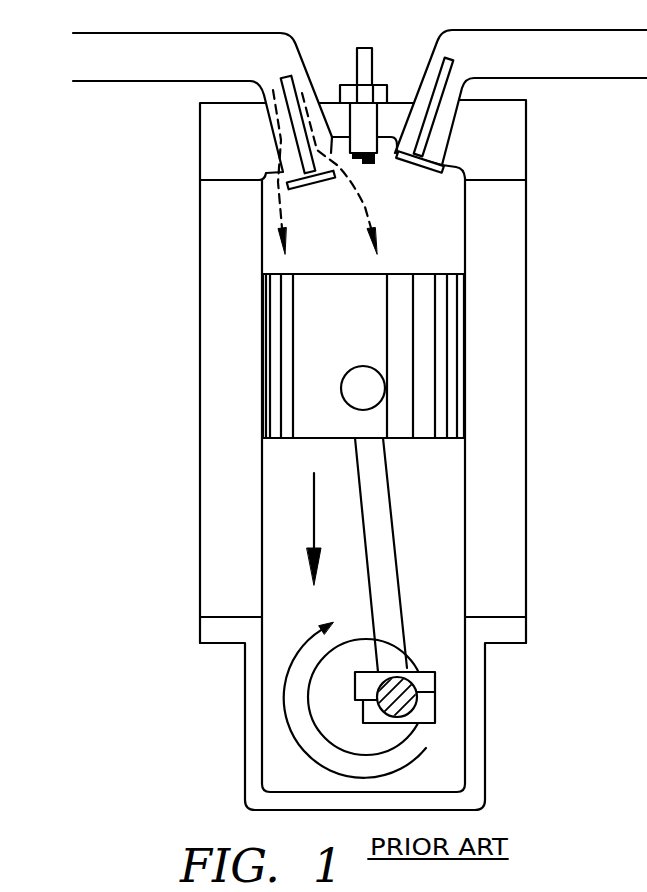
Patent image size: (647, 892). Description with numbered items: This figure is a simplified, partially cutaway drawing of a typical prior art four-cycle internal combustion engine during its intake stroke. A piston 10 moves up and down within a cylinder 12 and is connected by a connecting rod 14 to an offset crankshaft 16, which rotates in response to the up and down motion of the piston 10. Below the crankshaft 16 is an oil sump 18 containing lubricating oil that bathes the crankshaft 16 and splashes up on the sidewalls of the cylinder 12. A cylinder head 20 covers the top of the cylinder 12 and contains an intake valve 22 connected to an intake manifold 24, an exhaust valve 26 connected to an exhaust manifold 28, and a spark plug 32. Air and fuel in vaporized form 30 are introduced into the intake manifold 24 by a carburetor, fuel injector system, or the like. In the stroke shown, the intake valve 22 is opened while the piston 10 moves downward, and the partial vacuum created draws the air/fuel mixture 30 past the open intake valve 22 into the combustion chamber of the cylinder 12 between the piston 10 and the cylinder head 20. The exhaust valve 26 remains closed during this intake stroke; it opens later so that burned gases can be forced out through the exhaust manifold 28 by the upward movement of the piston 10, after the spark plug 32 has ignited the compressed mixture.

The piston 10 is at (442, 354).
The cylinder 12 is at (492, 262).
The connecting rod 14 is at (378, 533).
The crankshaft 16 is at (335, 715).
The oil sump 18 is at (445, 752).
The cylinder head 20 is at (497, 146).
The intake valve 22 is at (327, 181).
The intake manifold 24 is at (156, 82).
The exhaust valve 26 is at (408, 164).
The exhaust manifold 28 is at (548, 114).
The air/fuel mixture 30 is at (280, 218).
The spark plug 32 is at (365, 70).